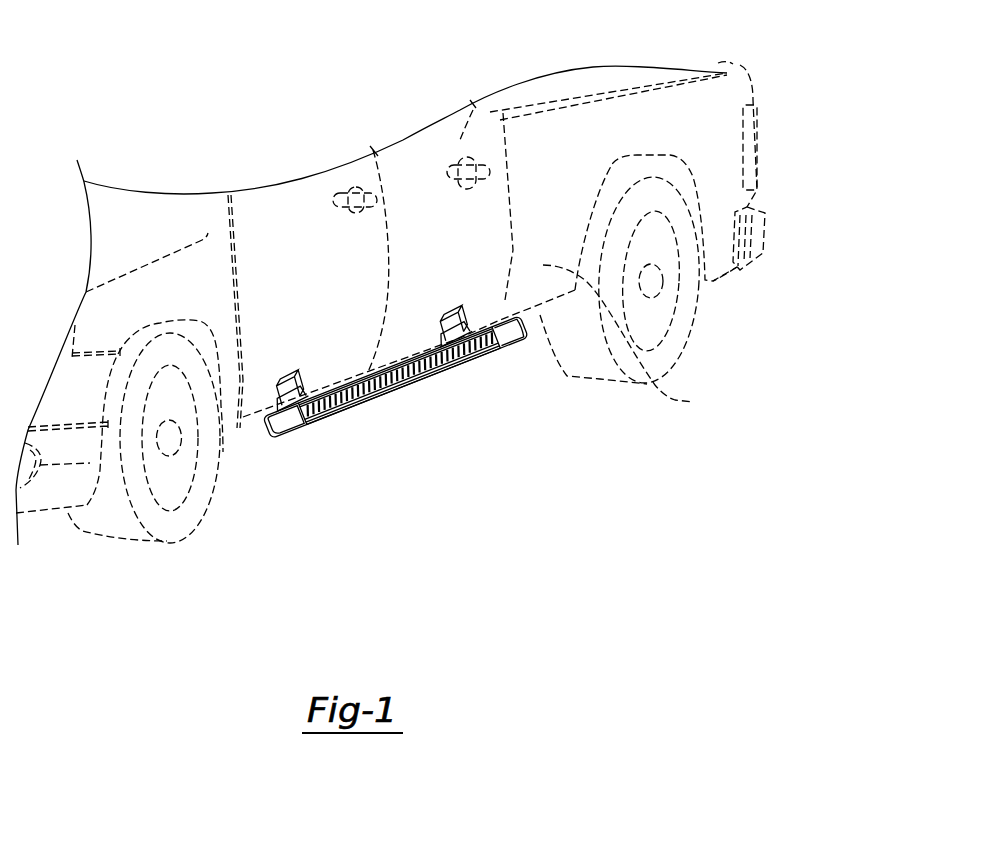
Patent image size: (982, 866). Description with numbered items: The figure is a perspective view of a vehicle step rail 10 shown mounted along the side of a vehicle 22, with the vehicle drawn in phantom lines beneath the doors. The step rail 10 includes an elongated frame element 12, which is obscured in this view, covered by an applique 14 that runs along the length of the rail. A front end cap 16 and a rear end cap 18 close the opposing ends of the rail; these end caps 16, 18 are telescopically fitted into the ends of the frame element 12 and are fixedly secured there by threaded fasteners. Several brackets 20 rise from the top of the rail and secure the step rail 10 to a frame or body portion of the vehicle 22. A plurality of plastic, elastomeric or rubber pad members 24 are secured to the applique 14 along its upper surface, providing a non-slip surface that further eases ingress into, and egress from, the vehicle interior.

The vehicle step rail 10 is at (481, 375).
The elongated frame element 12 is at (440, 375).
The applique 14 is at (343, 410).
The front end cap 16 is at (288, 422).
The rear end cap 18 is at (527, 343).
The brackets 20 is at (280, 380).
The vehicle 22 is at (682, 402).
The pad members 24 is at (397, 388).